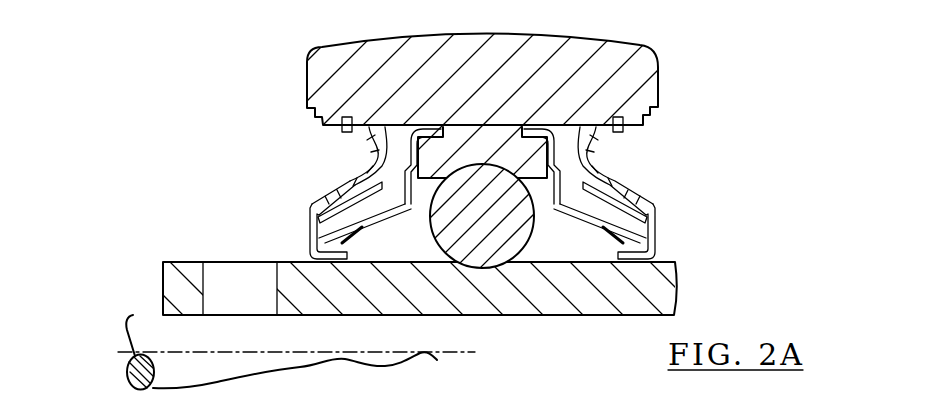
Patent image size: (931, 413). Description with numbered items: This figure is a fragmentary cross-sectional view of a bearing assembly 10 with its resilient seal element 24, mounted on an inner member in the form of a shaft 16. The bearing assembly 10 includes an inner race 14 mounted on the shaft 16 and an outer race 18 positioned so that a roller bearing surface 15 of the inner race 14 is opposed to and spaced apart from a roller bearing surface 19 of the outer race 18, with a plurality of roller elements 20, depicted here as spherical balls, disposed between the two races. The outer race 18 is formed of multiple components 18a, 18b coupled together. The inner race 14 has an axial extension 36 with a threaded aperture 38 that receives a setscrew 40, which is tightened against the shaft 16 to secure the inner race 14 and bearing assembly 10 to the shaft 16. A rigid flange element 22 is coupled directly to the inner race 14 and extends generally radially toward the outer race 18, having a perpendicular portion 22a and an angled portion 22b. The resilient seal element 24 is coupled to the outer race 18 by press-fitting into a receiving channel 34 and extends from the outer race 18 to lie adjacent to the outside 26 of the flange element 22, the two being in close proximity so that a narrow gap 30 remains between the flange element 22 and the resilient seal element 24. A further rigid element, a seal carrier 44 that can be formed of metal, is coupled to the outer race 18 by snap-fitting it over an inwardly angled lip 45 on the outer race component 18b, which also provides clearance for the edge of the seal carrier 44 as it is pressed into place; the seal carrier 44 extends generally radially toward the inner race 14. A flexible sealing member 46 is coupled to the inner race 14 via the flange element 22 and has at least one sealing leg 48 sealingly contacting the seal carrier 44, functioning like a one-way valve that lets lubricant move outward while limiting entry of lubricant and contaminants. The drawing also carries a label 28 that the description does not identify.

The bearing assembly 10 is at (724, 89).
The inner race 14 is at (452, 317).
The roller bearing surface 15 is at (484, 263).
The shaft 16 is at (177, 370).
The outer race 18 is at (493, 95).
The outer race component 18a is at (435, 70).
The outer race component 18b is at (483, 145).
The roller bearing surface 19 is at (450, 187).
The roller elements 20 is at (505, 235).
The flange element 22 is at (338, 263).
The perpendicular portion 22a is at (310, 243).
The angled portion 22b is at (313, 218).
The resilient seal element 24 is at (367, 157).
The outside of flange element 26 is at (328, 190).
The retainer band 28 is at (610, 217).
The narrow gap 30 is at (407, 196).
The receiving channel 34 is at (318, 80).
The axial extension 36 is at (173, 280).
The threaded aperture 38 is at (203, 295).
The setscrew 40 is at (230, 292).
The seal carrier 44 is at (363, 220).
The inwardly angled lip 45 is at (350, 115).
The flexible sealing member 46 is at (352, 224).
The sealing leg 48 is at (348, 237).